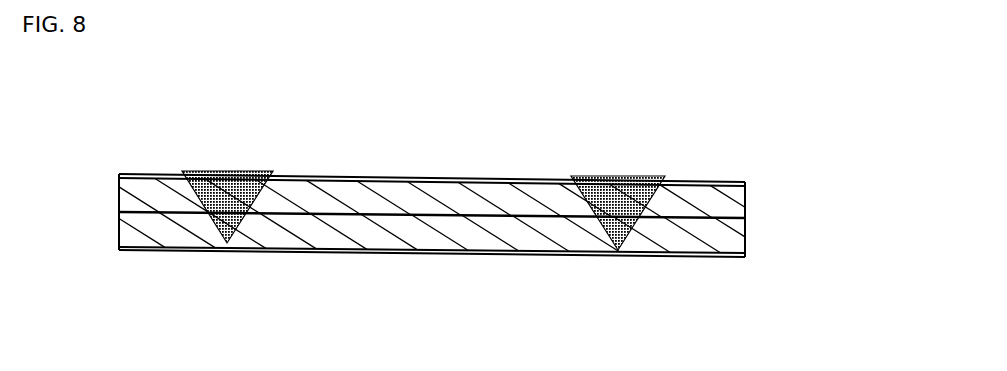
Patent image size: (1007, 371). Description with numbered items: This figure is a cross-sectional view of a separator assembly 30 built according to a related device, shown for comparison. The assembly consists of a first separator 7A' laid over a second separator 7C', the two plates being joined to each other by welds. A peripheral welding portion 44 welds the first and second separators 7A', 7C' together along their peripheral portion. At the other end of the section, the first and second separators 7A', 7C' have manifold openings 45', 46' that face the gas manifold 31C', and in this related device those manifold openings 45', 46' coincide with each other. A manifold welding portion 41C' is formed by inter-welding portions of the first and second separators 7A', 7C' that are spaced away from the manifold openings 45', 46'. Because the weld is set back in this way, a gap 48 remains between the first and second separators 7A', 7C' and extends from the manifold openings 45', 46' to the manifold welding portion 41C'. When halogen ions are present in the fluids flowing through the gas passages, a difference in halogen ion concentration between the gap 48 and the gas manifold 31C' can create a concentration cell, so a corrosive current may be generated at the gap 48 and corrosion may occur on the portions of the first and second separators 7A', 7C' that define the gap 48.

The separator assembly 30 is at (140, 163).
The first separator 7A' is at (432, 141).
The second separator 7C' is at (432, 282).
The peripheral welding portion 44 is at (221, 243).
The manifold welding portion 41C' is at (606, 260).
The manifold opening 45' is at (471, 147).
The manifold opening 46' is at (454, 296).
The gap 48 is at (670, 230).
The gas manifold 31C' is at (793, 219).